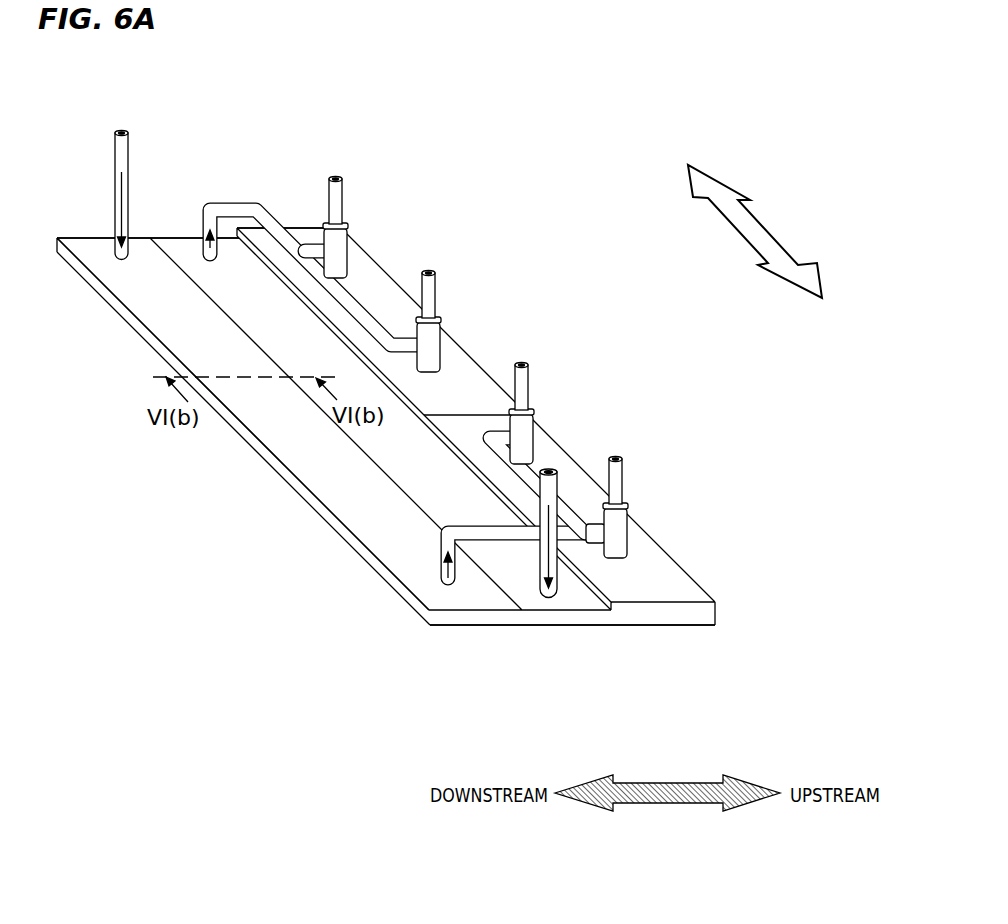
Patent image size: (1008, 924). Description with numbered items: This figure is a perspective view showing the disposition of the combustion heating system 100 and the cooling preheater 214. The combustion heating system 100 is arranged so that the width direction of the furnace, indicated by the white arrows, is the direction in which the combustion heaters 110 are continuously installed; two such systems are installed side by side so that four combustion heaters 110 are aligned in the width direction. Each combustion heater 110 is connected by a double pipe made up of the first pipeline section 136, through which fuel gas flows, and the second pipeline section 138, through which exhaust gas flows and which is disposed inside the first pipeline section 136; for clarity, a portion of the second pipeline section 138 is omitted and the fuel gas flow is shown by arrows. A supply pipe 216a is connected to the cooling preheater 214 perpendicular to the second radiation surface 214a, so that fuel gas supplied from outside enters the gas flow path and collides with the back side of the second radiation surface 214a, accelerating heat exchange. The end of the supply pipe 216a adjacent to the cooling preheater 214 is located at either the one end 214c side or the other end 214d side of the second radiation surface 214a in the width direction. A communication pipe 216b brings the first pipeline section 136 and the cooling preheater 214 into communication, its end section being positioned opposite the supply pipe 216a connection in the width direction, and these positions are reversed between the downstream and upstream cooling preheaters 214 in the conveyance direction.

The combustion heating system 100 is at (293, 218).
The combustion heater 110 is at (357, 267).
The first pipeline section 136 is at (360, 270).
The second pipeline section 138 is at (322, 182).
The cooling preheater 214 is at (392, 548).
The second radiation surface 214a is at (350, 542).
The one end 214c is at (503, 617).
The other end 214d is at (132, 237).
The supply pipe 216a is at (113, 196).
The communication pipe 216b is at (227, 201).